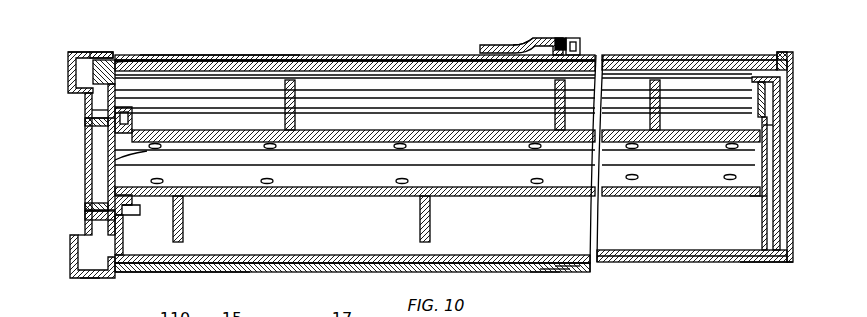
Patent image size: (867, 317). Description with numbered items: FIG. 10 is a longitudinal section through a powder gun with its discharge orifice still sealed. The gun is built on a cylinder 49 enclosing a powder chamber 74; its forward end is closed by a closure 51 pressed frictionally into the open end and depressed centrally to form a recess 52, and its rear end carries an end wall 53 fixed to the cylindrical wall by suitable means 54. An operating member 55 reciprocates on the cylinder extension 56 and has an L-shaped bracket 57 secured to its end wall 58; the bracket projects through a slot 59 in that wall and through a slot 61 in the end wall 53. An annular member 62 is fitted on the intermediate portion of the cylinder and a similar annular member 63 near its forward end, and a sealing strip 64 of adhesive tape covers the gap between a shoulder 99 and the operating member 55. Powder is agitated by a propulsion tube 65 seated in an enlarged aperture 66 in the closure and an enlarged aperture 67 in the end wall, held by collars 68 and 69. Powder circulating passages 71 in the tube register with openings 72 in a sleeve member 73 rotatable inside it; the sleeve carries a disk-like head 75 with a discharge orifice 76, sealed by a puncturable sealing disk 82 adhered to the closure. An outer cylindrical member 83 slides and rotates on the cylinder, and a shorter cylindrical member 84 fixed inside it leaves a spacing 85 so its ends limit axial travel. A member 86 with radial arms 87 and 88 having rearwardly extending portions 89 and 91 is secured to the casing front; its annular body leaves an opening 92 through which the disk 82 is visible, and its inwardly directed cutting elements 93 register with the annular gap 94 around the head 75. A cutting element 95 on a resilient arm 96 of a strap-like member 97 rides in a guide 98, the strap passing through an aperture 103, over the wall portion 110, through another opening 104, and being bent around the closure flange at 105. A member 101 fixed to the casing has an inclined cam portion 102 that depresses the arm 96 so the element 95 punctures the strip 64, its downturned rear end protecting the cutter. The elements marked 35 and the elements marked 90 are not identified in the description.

The rib 35 is at (555, 104).
The cylinder 49 is at (311, 254).
The closure 51 is at (124, 241).
The recess 52 is at (136, 214).
The end wall 53 is at (762, 221).
The fixing means 54 is at (770, 263).
The operating member 55 is at (662, 54).
The cylinder extension 56 is at (640, 250).
The L-shaped bracket 57 is at (780, 118).
The end wall 58 is at (787, 200).
The slot 59 is at (787, 74).
The slot 61 is at (756, 90).
The annular member 62 is at (546, 272).
The annular member 63 is at (160, 273).
The sealing strip 64 is at (560, 268).
The propulsion tube 65 is at (348, 128).
The enlarged aperture 66 is at (133, 125).
The enlarged aperture 67 is at (773, 125).
The annular flange 68 is at (127, 195).
The annular flange 69 is at (754, 199).
The powder circulating passages 71 is at (403, 146).
The openings 72 is at (409, 180).
The sleeve member 73 is at (316, 185).
The powder chamber 74 is at (392, 90).
The disk-like head 75 is at (127, 158).
The discharge orifice 76 is at (108, 172).
The puncturable sealing disk 82 is at (92, 112).
The outer cylindrical member 83 is at (314, 54).
The cylindrical member 84 is at (251, 263).
The spacing 85 is at (458, 262).
The member 86 is at (83, 216).
The radial arm 87 is at (68, 71).
The radial arm 88 is at (70, 257).
The rearwardly extending portion 89 is at (96, 52).
The seal 90 is at (85, 126).
The rearwardly extending portion 91 is at (98, 278).
The opening 92 is at (85, 165).
The cutting elements 93 is at (85, 118).
The annular gap 94 is at (122, 62).
The cutting element 95 is at (560, 38).
The resilient arm 96 is at (532, 44).
The strap-like member 97 is at (240, 54).
The guide 98 is at (356, 61).
The shoulder 99 is at (554, 273).
The member 101 is at (580, 42).
The inclined portion 102 is at (518, 46).
The aperture 103 is at (256, 55).
The opening 104 is at (112, 60).
The bent end 105 is at (74, 52).
The wall portion 110 is at (190, 54).